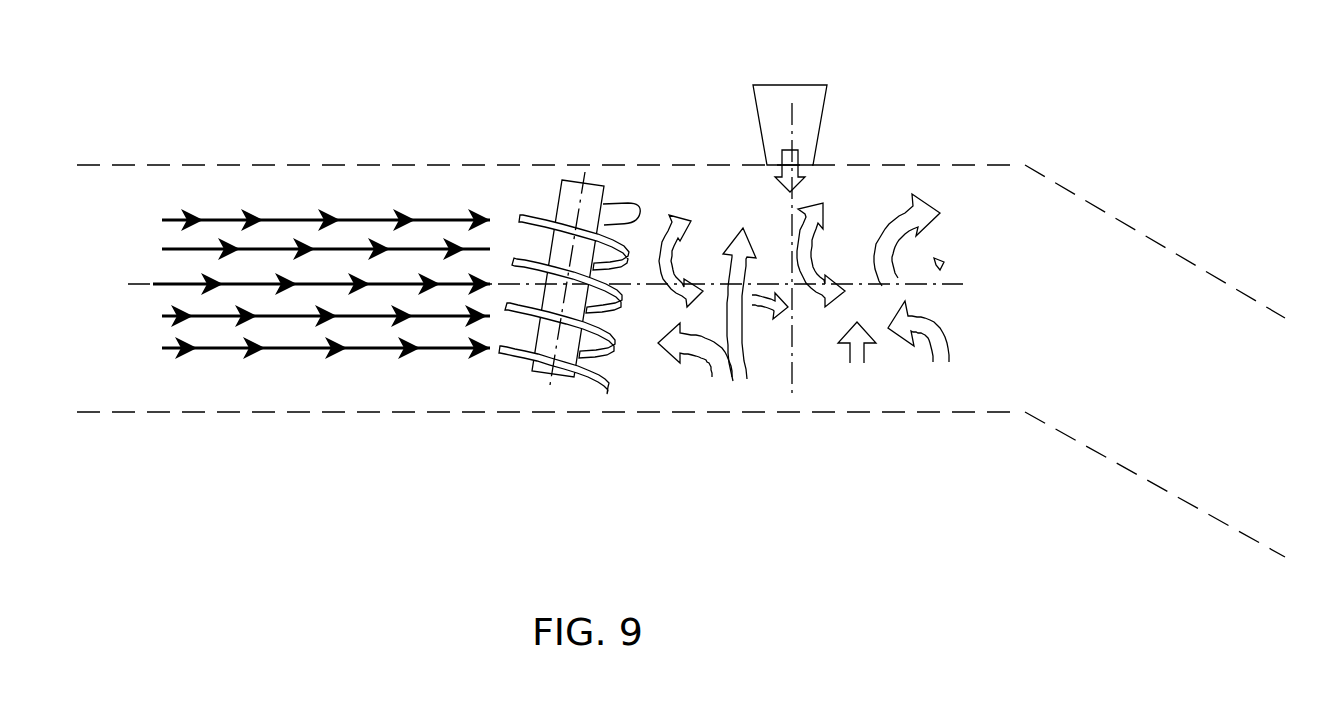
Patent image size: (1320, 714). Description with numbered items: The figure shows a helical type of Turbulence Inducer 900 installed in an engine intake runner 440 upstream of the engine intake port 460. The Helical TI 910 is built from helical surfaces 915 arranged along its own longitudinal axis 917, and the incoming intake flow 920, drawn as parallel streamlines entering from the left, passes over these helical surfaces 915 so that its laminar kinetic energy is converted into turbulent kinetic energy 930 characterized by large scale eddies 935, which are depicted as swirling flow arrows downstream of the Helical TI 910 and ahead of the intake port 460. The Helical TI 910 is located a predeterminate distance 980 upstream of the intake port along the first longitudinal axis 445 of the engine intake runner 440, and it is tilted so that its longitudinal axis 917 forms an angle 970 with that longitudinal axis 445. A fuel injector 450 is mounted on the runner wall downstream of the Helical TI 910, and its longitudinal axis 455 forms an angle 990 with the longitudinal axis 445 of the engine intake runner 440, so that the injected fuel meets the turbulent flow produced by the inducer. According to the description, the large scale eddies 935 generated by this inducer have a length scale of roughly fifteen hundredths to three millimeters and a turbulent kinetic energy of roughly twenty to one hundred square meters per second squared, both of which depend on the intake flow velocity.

The Turbulence Inducer 900 is at (337, 82).
The engine intake runner 440 is at (46, 297).
The engine intake port 460 is at (1103, 355).
The incoming intake flow 920 is at (272, 338).
The Helical TI 910 is at (592, 193).
The longitudinal axis 917 is at (578, 178).
The helical surfaces 915 is at (568, 357).
The angle (α) 970 is at (579, 322).
The predeterminate distance (δ) 980 is at (645, 245).
The fuel injector 450 is at (771, 74).
The longitudinal axis 455 is at (788, 404).
The large scale eddies 935 is at (750, 340).
The angle (β) 990 is at (810, 318).
The turbulent kinetic energy 930 is at (832, 392).
The longitudinal axis 445 is at (960, 259).